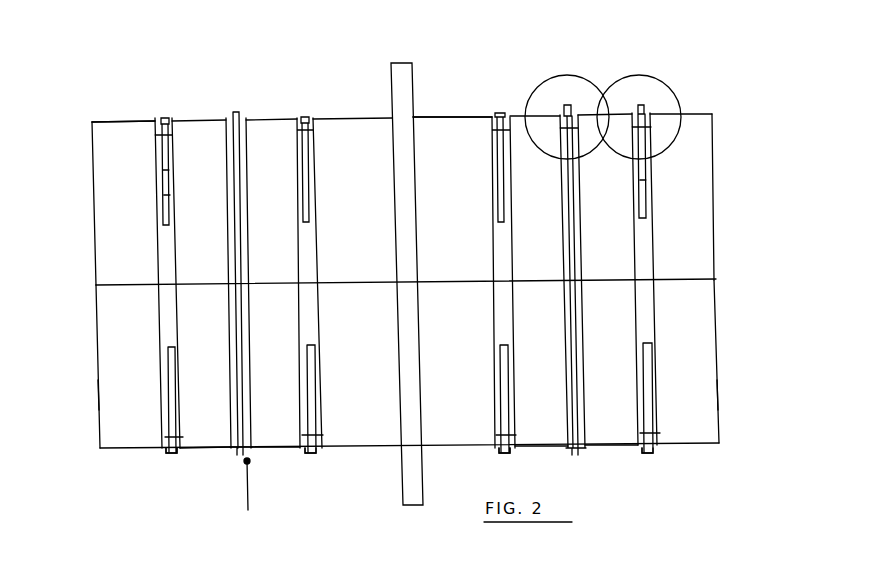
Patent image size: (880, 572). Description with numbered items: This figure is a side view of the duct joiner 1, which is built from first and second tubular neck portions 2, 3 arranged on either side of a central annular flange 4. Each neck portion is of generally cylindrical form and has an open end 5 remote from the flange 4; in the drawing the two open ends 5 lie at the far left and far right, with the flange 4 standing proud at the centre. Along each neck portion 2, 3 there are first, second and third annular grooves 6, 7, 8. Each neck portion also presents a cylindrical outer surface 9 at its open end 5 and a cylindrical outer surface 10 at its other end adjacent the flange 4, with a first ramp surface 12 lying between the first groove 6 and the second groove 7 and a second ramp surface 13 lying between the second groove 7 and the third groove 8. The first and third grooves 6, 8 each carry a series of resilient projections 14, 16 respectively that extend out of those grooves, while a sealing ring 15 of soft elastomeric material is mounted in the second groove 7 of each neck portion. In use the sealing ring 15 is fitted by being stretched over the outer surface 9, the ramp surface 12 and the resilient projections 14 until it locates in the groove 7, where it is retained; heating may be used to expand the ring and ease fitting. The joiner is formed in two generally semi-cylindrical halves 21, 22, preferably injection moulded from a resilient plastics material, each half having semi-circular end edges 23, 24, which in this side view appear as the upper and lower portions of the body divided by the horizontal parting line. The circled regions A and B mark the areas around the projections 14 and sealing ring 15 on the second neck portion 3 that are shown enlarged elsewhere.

The duct joiner 1 is at (349, 55).
The first tubular neck portion 2 is at (205, 95).
The second tubular neck portion 3 is at (462, 92).
The central annular flange 4 is at (413, 505).
The open end 5 is at (98, 393).
The first annular groove 6 is at (170, 455).
The second annular groove 7 is at (243, 458).
The third annular groove 8 is at (318, 455).
The cylindrical outer surface 9 is at (118, 452).
The cylindrical outer surface 10 is at (352, 450).
The first ramp surface 12 is at (205, 452).
The second ramp surface 13 is at (280, 452).
The resilient projections 14 is at (162, 118).
The sealing ring 15 is at (236, 118).
The resilient projections 16 is at (304, 118).
The semi-cylindrical half 21 is at (698, 162).
The semi-cylindrical half 22 is at (703, 320).
The semi-circular end edge 23 is at (93, 237).
The semi-circular end edge 24 is at (722, 418).
The detail A is at (643, 111).
The detail B is at (567, 109).